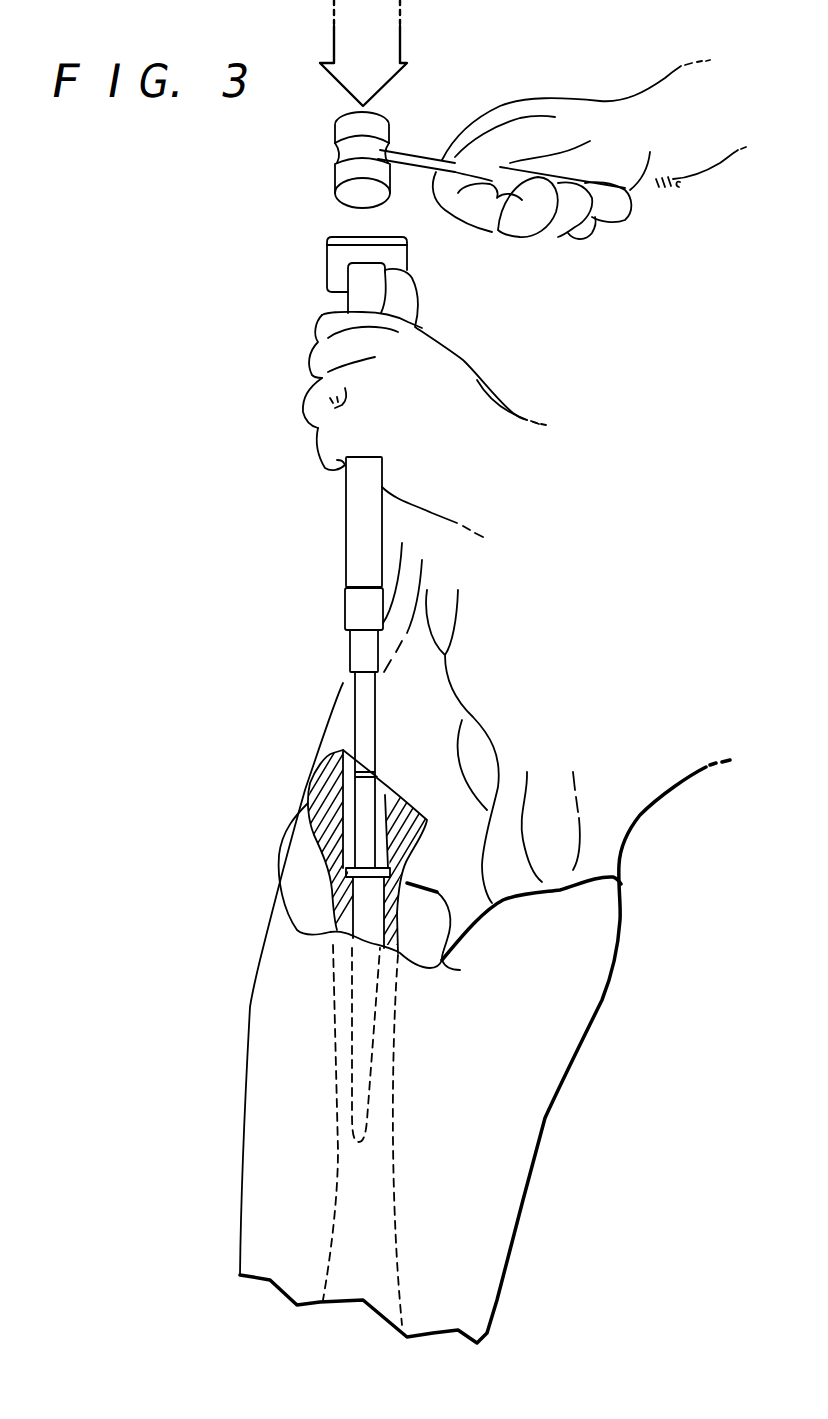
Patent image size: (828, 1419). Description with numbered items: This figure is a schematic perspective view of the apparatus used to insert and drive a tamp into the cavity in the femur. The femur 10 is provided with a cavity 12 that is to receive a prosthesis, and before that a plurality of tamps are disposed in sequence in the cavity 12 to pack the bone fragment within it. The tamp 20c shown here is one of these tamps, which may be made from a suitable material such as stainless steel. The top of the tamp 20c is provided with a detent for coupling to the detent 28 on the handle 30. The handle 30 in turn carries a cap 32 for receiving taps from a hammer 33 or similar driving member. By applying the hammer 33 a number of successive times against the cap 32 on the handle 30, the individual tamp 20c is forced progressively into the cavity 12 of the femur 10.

The femur 10 is at (446, 966).
The cavity 12 is at (396, 832).
The tamp 20c is at (372, 903).
The detent 28 is at (360, 614).
The handle 30 is at (365, 499).
The cap 32 is at (338, 273).
The hammer 33 is at (335, 181).